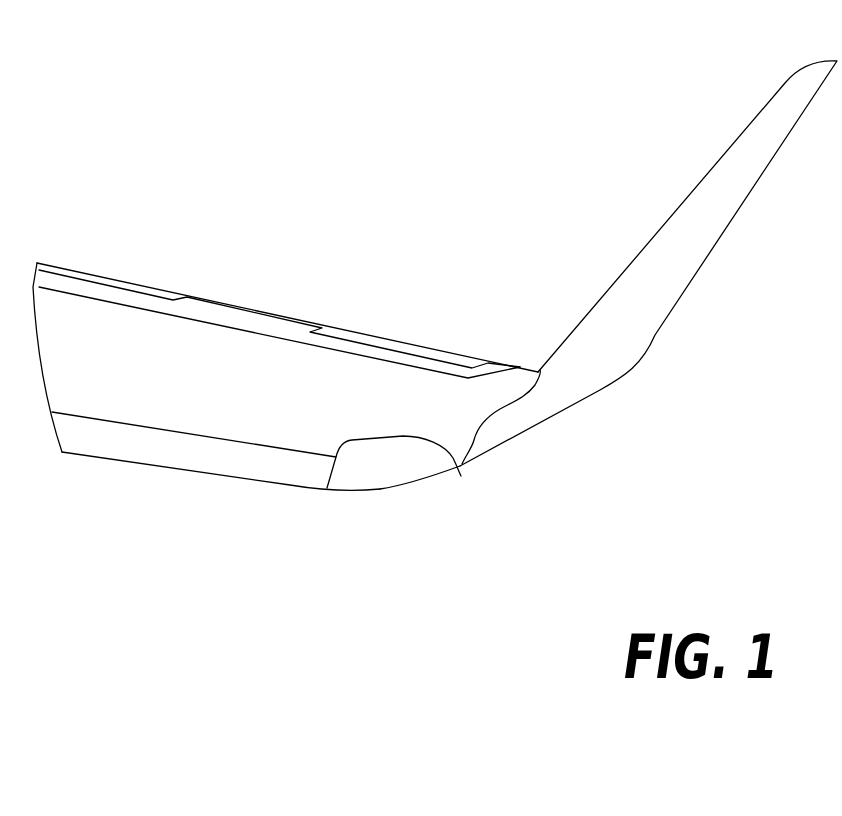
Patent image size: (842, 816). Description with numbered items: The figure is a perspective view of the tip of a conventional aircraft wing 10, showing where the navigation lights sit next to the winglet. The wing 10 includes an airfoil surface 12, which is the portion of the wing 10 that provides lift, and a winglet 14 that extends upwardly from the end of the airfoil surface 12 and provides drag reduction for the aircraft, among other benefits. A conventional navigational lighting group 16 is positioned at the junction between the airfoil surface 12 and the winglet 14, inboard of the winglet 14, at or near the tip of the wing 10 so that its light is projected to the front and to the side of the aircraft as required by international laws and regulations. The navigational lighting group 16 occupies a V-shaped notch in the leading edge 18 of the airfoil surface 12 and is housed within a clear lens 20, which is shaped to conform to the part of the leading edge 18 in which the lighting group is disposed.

The wing 10 is at (258, 272).
The airfoil surface 12 is at (313, 377).
The winglet 14 is at (679, 281).
The navigational lighting group 16 is at (377, 473).
The leading edge 18 is at (222, 476).
The clear lens 20 is at (417, 480).